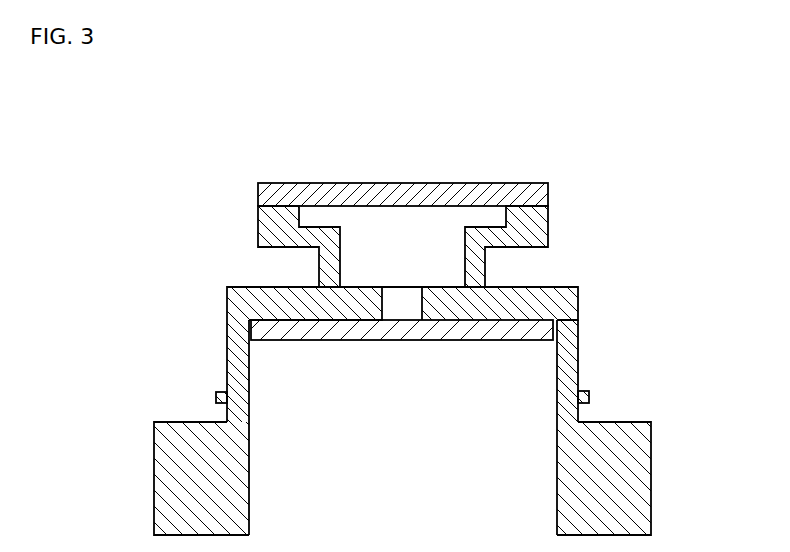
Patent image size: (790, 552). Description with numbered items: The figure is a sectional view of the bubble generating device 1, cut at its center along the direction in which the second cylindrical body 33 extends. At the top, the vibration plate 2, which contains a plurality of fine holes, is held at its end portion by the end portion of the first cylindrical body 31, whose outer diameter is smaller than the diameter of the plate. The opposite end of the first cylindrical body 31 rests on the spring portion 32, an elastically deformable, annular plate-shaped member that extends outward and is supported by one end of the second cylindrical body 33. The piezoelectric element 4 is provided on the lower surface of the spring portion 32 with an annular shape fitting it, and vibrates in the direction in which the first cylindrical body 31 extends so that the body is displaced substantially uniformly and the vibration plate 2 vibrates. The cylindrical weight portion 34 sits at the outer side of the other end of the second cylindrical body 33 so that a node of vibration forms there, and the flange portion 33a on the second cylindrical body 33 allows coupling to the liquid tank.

The bubble generating device 1 is at (571, 171).
The vibration plate 2 is at (502, 193).
The first cylindrical body 31 is at (487, 268).
The spring portion 32 is at (561, 304).
The second cylindrical body 33 is at (373, 427).
The flange portion 33a is at (216, 397).
The weight portion 34 is at (623, 477).
The piezoelectric element 4 is at (268, 331).